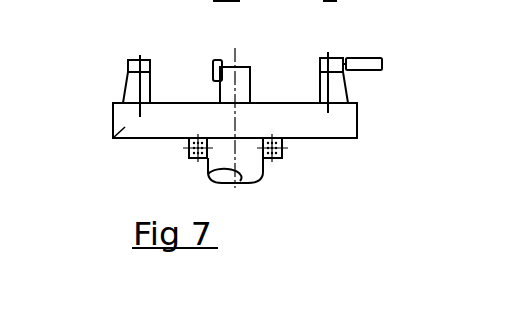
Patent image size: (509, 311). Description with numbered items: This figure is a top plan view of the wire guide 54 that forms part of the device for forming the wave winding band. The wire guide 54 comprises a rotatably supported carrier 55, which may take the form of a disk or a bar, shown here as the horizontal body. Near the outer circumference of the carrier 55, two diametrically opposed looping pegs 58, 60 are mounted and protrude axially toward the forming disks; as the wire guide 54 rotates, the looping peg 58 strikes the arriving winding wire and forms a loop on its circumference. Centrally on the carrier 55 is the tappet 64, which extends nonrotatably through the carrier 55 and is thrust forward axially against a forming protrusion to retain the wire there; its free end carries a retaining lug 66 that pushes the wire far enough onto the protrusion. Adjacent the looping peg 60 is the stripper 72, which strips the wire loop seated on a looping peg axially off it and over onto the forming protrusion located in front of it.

The wire guide 54 is at (357, 137).
The carrier 55 is at (113, 138).
The looping peg 58 is at (130, 88).
The looping peg 60 is at (348, 92).
The tappet 64 is at (243, 77).
The retaining lug 66 is at (214, 63).
The stripper 72 is at (378, 63).